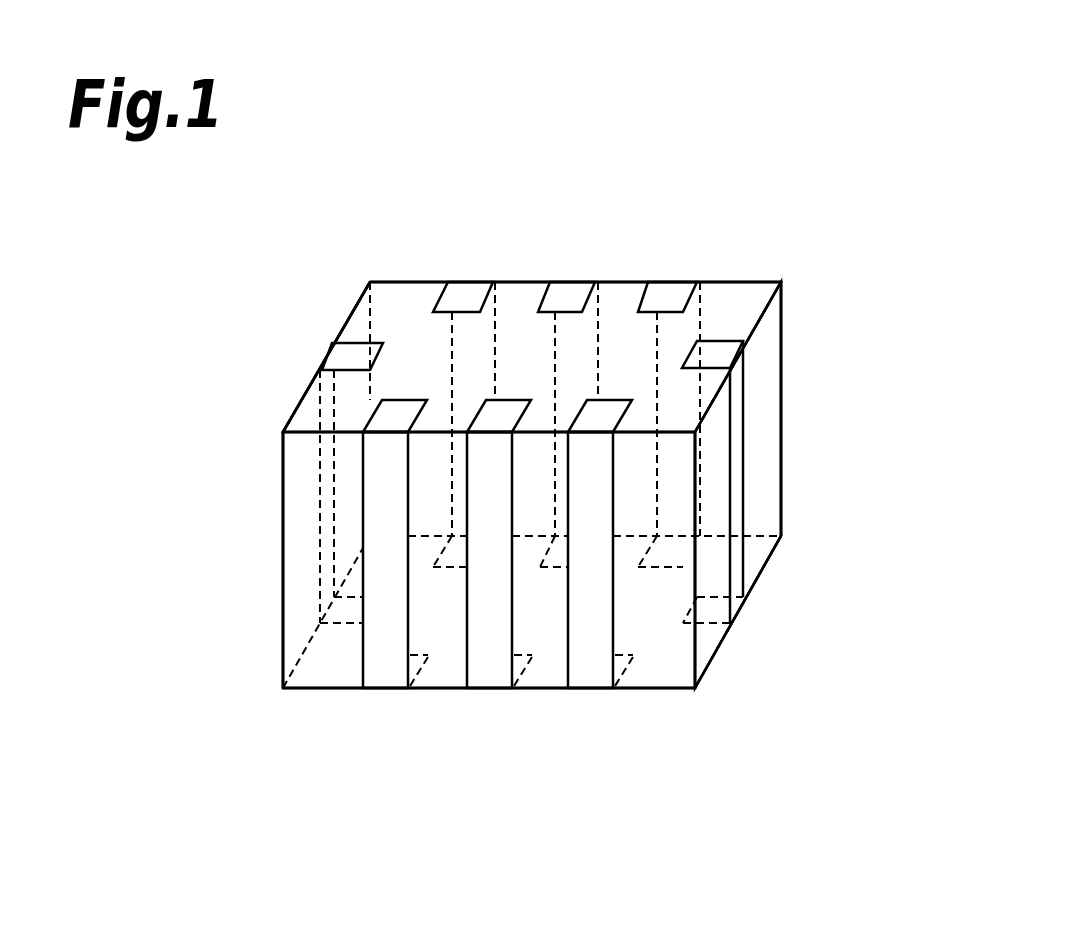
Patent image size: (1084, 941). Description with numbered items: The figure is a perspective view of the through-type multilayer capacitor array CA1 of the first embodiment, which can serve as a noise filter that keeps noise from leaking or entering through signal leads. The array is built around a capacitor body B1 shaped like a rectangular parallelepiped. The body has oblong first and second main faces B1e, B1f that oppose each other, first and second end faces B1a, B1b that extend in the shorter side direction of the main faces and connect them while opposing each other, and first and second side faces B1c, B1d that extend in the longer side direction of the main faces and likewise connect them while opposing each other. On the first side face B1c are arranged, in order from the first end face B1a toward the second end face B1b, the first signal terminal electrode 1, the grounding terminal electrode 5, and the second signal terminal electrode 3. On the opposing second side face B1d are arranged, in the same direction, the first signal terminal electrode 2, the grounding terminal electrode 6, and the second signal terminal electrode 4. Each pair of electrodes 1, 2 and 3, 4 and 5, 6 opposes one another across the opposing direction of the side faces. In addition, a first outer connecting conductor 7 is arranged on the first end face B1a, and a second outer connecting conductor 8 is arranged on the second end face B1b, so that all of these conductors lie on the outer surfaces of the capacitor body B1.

The through-type multilayer capacitor array CA1 is at (743, 118).
The capacitor body B1 is at (759, 278).
The first end face B1a is at (310, 534).
The second end face B1b is at (763, 482).
The first side face B1c is at (452, 615).
The second side face B1d is at (755, 412).
The first main face B1e is at (408, 296).
The second main face B1f is at (657, 640).
The first signal terminal electrode 1 is at (390, 660).
The first signal terminal electrode 2 is at (468, 284).
The second signal terminal electrode 3 is at (597, 662).
The second signal terminal electrode 4 is at (677, 285).
The grounding terminal electrode 5 is at (492, 662).
The grounding terminal electrode 6 is at (572, 287).
The first outer connecting conductor 7 is at (352, 357).
The second outer connecting conductor 8 is at (735, 545).